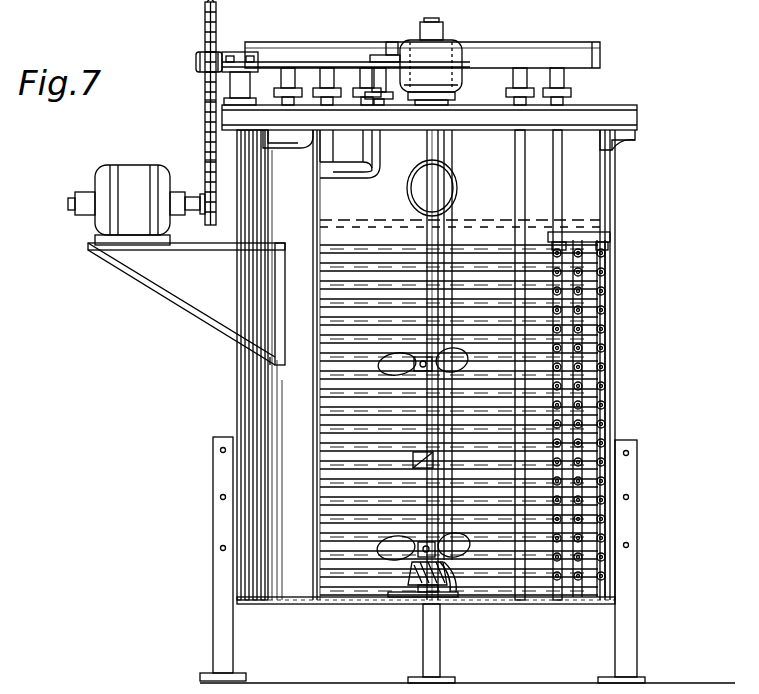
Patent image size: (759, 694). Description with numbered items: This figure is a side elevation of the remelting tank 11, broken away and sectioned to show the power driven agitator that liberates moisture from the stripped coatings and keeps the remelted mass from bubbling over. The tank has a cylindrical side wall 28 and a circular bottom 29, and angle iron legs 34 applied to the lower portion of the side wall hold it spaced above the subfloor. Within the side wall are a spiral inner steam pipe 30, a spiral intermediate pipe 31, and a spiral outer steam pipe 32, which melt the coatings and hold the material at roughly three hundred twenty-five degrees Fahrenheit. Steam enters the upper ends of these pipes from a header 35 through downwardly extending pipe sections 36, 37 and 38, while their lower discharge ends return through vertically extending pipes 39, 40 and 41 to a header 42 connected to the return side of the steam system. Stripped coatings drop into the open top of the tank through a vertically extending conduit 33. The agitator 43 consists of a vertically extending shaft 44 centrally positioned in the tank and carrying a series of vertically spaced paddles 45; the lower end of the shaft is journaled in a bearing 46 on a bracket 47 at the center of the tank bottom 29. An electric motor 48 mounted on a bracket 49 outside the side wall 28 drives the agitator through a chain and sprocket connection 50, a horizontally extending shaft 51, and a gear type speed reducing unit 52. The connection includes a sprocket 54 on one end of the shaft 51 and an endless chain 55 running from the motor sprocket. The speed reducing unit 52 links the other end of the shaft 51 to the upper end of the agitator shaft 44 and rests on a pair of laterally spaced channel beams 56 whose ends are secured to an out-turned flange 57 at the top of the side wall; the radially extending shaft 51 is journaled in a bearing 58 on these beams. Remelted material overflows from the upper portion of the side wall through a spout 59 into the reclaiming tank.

The remelting tank 11 is at (618, 390).
The cylindrical side wall 28 is at (617, 340).
The circular bottom 29 is at (527, 603).
The spiral inner steam pipe 30 is at (580, 225).
The spiral intermediate pipe 31 is at (578, 242).
The spiral outer steam pipe 32 is at (606, 250).
The vertically extending conduit 33 is at (225, 246).
The angle iron legs 34 is at (637, 590).
The header 35 is at (384, 42).
The downwardly extending pipe section 36 is at (365, 68).
The downwardly extending pipe section 37 is at (327, 70).
The downwardly extending pipe section 38 is at (288, 70).
The vertically extending pipe 39 is at (449, 162).
The vertically extending pipe 40 is at (515, 176).
The vertically extending pipe 41 is at (556, 176).
The header 42 is at (553, 50).
The agitator 43 is at (425, 153).
The agitator shaft 44 is at (418, 200).
The paddles 45 is at (338, 612).
The bearing 46 is at (420, 586).
The bracket 47 is at (448, 597).
The electric motor 48 is at (130, 178).
The bracket 49 is at (135, 278).
The chain and sprocket connection 50 is at (203, 108).
The horizontally extending shaft 51 is at (300, 60).
The gear type speed reducing unit 52 is at (440, 48).
The sprocket 54 is at (204, 32).
The endless chain 55 is at (207, 158).
The channel beams 56 is at (618, 118).
The out-turned flange 57 is at (272, 140).
The bearing 58 is at (236, 52).
The spout 59 is at (410, 180).